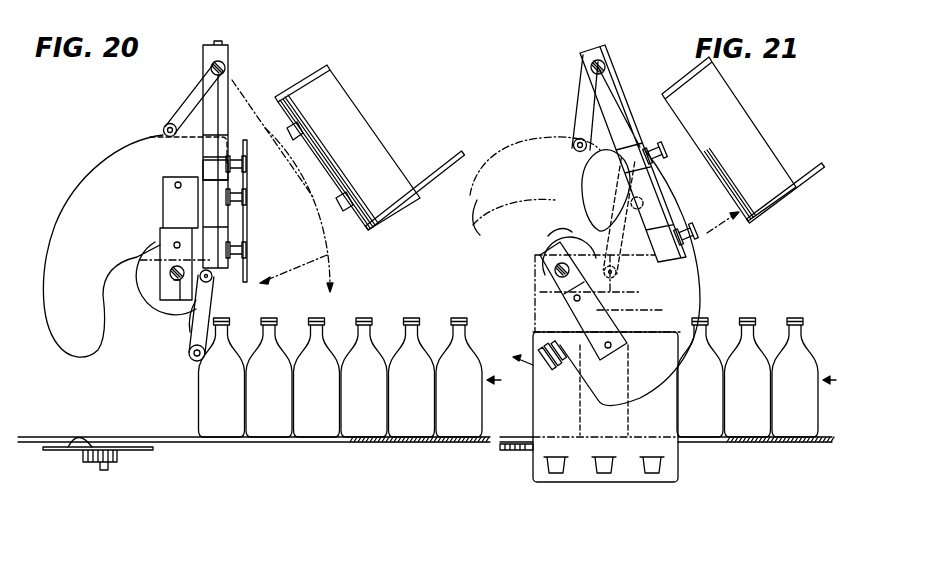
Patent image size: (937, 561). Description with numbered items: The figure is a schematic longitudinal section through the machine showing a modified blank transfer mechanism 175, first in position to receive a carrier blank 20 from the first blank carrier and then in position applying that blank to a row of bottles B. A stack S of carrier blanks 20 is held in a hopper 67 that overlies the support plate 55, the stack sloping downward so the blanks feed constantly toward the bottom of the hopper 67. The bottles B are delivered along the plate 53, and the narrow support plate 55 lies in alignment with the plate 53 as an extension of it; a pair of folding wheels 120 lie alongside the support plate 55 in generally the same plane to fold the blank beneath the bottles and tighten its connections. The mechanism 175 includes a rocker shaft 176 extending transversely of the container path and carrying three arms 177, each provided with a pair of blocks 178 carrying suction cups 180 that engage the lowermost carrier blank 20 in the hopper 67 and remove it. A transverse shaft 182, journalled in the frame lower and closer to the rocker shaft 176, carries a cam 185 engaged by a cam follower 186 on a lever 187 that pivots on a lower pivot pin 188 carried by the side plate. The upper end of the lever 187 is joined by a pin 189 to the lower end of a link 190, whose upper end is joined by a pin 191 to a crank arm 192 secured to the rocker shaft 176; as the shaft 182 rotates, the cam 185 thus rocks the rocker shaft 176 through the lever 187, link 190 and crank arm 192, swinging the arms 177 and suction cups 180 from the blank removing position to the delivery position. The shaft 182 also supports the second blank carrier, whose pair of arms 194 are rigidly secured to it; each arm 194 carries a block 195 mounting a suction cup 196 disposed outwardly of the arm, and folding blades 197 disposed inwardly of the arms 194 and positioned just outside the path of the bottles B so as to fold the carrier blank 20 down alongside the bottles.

In FIG. 20, the carrier blank 20 is at (243, 282).
In FIG. 21, the carrier blank 20 is at (718, 144).
In FIG. 20, the plate 53 is at (435, 440).
In FIG. 21, the plate 53 is at (798, 442).
In FIG. 20, the support plate 55 is at (70, 398).
In FIG. 20, the hopper 67 is at (386, 218).
In FIG. 21, the hopper 67 is at (791, 198).
In FIG. 20, the folding wheels 120 is at (65, 447).
In FIG. 21, the folding wheels 120 is at (520, 450).
In FIG. 20, the blank transfer mechanism 175 is at (288, 73).
In FIG. 21, the blank transfer mechanism 175 is at (631, 73).
In FIG. 20, the rocker shaft 176 is at (226, 66).
In FIG. 21, the rocker shaft 176 is at (594, 66).
In FIG. 20, the arms 177 is at (213, 102).
In FIG. 21, the arms 177 is at (619, 97).
In FIG. 20, the blocks 178 is at (204, 164).
In FIG. 21, the blocks 178 is at (703, 247).
In FIG. 20, the suction cups 180 is at (325, 128).
In FIG. 21, the suction cups 180 is at (688, 232).
In FIG. 20, the transverse shaft 182 is at (175, 280).
In FIG. 21, the transverse shaft 182 is at (556, 270).
In FIG. 20, the cam 185 is at (178, 302).
In FIG. 21, the cam 185 is at (560, 231).
In FIG. 20, the cam follower 186 is at (212, 284).
In FIG. 21, the cam follower 186 is at (649, 284).
In FIG. 20, the lever 187 is at (190, 333).
In FIG. 21, the lever 187 is at (612, 240).
In FIG. 20, the lower pivot pin 188 is at (192, 360).
In FIG. 21, the pin 189 is at (615, 214).
In FIG. 20, the link 190 is at (200, 167).
In FIG. 21, the link 190 is at (597, 195).
In FIG. 20, the pin 191 is at (167, 126).
In FIG. 21, the pin 191 is at (577, 146).
In FIG. 20, the crank arm 192 is at (190, 100).
In FIG. 21, the crank arm 192 is at (588, 92).
In FIG. 20, the arms 194 is at (175, 245).
In FIG. 21, the arms 194 is at (667, 275).
In FIG. 20, the block 195 is at (172, 201).
In FIG. 21, the block 195 is at (552, 302).
In FIG. 20, the suction cup 196 is at (236, 205).
In FIG. 21, the suction cup 196 is at (545, 340).
In FIG. 20, the folding blades 197 is at (62, 326).
In FIG. 21, the folding blades 197 is at (687, 388).
In FIG. 20, the bottle B is at (262, 405).
In FIG. 21, the bottle B is at (782, 358).
In FIG. 21, the stack S is at (764, 143).